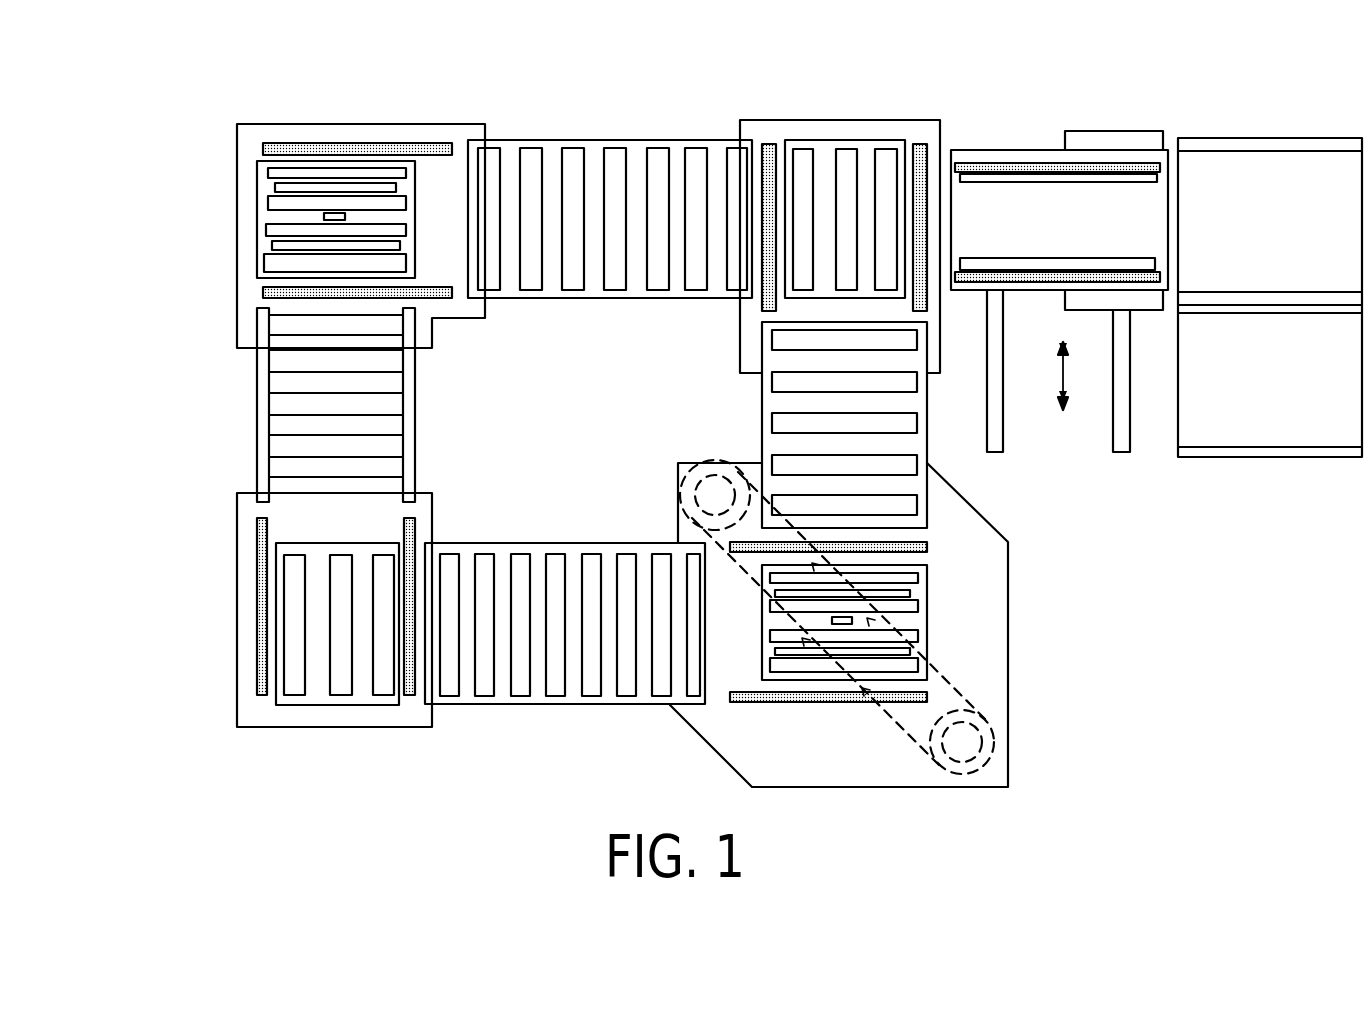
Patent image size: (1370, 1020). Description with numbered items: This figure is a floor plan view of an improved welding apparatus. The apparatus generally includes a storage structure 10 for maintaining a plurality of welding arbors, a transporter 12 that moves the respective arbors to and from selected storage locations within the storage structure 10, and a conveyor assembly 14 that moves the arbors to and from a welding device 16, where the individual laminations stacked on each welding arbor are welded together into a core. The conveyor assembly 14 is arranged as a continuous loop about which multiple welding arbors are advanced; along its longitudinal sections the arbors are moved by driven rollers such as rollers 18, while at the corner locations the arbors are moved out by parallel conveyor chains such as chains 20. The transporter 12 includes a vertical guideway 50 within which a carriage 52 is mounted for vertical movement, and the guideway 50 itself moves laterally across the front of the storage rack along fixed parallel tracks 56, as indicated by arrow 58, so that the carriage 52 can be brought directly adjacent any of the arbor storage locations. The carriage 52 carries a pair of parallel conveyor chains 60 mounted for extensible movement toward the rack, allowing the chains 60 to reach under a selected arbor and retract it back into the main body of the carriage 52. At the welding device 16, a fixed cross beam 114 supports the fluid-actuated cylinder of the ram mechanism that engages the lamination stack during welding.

The storage structure 10 is at (1251, 125).
The transporter 12 is at (1031, 128).
The conveyor assembly 14 is at (598, 128).
The welding device 16 is at (1026, 645).
The rollers 18 is at (520, 690).
The conveyor chains 20 is at (263, 695).
The vertical guideway 50 is at (1128, 130).
The carriage 52 is at (982, 150).
The fixed parallel tracks 56 is at (1112, 505).
The arrow 58 is at (1062, 385).
The conveyor chains 60 is at (1108, 270).
The fixed cross beam 114 is at (889, 716).